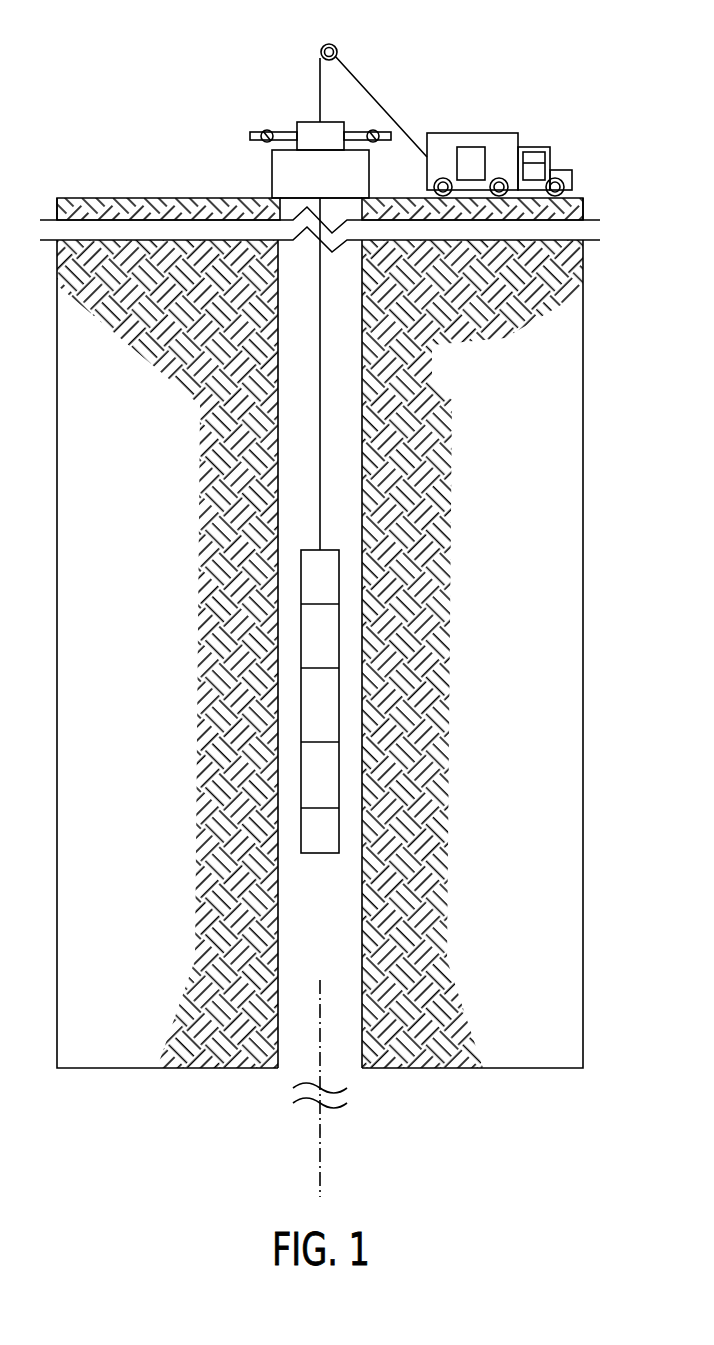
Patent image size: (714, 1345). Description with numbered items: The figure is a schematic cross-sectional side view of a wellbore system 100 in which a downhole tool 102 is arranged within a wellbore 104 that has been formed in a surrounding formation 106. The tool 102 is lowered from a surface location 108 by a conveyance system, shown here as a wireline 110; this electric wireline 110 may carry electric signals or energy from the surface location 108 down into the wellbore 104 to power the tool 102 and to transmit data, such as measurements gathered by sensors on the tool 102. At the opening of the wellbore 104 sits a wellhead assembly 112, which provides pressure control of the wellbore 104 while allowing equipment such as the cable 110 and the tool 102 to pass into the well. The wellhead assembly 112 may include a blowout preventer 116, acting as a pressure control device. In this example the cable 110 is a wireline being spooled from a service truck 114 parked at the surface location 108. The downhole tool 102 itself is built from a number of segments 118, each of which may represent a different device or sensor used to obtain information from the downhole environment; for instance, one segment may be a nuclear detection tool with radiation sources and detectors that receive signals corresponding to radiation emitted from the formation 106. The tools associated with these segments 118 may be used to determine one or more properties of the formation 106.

The wellbore system 100 is at (488, 62).
The downhole tool 102 is at (337, 395).
The wellbore 104 is at (362, 493).
The formation 106 is at (123, 542).
The surface location 108 is at (93, 198).
The wireline 110 is at (320, 300).
The wellhead assembly 112 is at (308, 107).
The service truck 114 is at (490, 133).
The blowout preventer 116 is at (228, 170).
The segments 118 is at (327, 570).